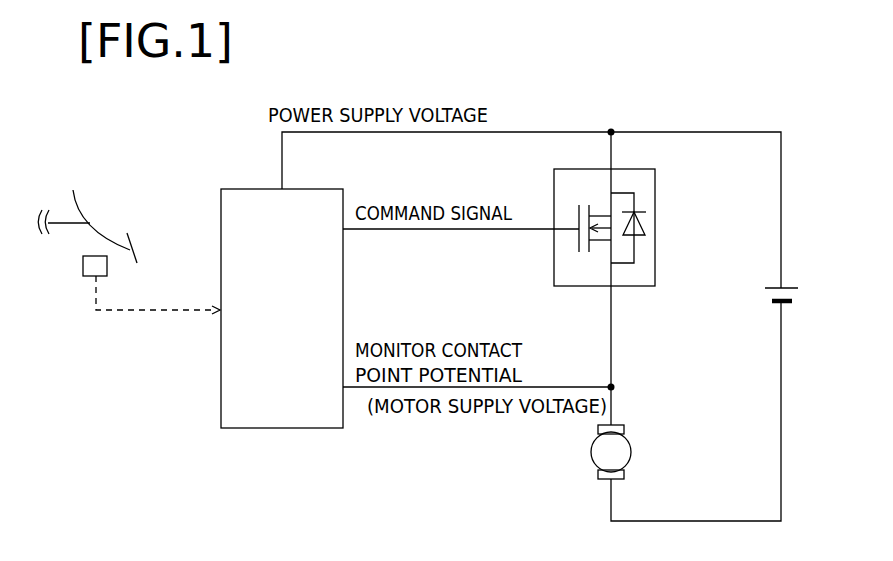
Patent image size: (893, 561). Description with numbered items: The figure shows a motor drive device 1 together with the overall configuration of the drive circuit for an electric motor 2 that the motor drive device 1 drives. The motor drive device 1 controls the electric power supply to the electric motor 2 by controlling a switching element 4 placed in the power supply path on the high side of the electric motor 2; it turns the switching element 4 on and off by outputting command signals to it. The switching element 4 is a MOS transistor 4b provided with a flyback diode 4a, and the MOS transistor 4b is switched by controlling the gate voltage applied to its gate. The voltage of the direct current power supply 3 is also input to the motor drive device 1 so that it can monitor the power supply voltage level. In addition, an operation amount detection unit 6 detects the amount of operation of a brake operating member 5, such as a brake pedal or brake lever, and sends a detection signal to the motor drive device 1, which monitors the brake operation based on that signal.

The motor drive device 1 is at (290, 428).
The electric motor 2 is at (632, 450).
The direct current power supply 3 is at (787, 287).
The switching element 4 is at (640, 240).
The flyback diode 4a is at (646, 211).
The MOS transistor 4b is at (576, 250).
The brake operating member 5 is at (130, 237).
The operation amount detection unit 6 is at (88, 276).